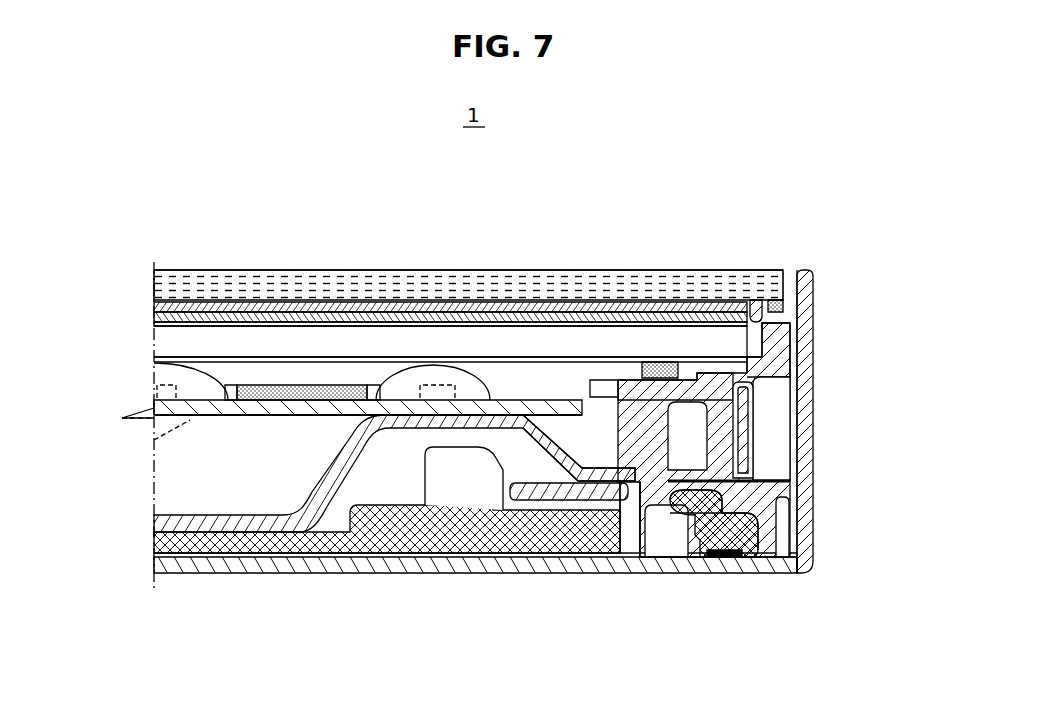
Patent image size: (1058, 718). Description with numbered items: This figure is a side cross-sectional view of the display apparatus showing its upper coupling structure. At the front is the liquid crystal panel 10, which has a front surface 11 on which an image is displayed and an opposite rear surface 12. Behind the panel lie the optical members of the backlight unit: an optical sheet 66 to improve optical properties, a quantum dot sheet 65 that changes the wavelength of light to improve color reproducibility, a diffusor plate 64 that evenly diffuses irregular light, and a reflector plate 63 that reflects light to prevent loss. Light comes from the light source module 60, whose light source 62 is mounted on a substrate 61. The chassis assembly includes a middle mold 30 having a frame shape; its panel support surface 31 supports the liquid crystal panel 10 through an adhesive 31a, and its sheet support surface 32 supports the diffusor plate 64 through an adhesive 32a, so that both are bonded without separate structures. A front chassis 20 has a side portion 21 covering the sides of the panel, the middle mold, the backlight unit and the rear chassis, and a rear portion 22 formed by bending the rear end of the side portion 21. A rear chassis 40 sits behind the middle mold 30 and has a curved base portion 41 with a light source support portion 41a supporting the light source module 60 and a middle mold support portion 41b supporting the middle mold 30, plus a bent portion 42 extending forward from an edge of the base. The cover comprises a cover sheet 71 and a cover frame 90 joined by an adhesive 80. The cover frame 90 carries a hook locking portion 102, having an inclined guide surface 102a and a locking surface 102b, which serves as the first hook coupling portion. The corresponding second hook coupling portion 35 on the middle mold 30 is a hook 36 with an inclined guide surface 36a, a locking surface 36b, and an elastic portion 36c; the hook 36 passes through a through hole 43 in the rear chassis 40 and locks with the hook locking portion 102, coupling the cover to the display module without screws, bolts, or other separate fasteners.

The liquid crystal panel 10 is at (522, 268).
The front surface 11 is at (440, 270).
The rear surface 12 is at (735, 306).
The front chassis 20 is at (815, 378).
The side portion 21 is at (806, 290).
The rear portion 22 is at (775, 490).
The middle mold 30 is at (793, 346).
The panel support surface 31 is at (763, 322).
The adhesive 31a is at (776, 300).
The sheet support surface 32 is at (647, 384).
The adhesive 32a is at (660, 362).
The second hook coupling portion 35 is at (644, 478).
The hook 36 is at (676, 650).
The inclined guide surface 36a is at (700, 560).
The locking surface 36b is at (648, 556).
The elastic portion 36c is at (606, 520).
The rear chassis 40 is at (393, 447).
The base portion 41 is at (453, 432).
The light source support portion 41a is at (417, 430).
The middle mold support portion 41b is at (600, 498).
The bent portion 42 is at (752, 410).
The through hole 43 is at (758, 472).
The light source module 60 is at (92, 443).
The substrate 61 is at (254, 410).
The light source 62 is at (170, 398).
The reflector plate 63 is at (247, 355).
The diffusor plate 64 is at (258, 386).
The quantum dot sheet 65 is at (310, 318).
The optical sheet 66 is at (354, 305).
The cover sheet 71 is at (765, 574).
The adhesive 80 is at (718, 560).
The cover frame 90 is at (790, 562).
The hook locking portion 102 is at (905, 505).
The inclined guide surface 102a is at (724, 498).
The locking surface 102b is at (758, 535).